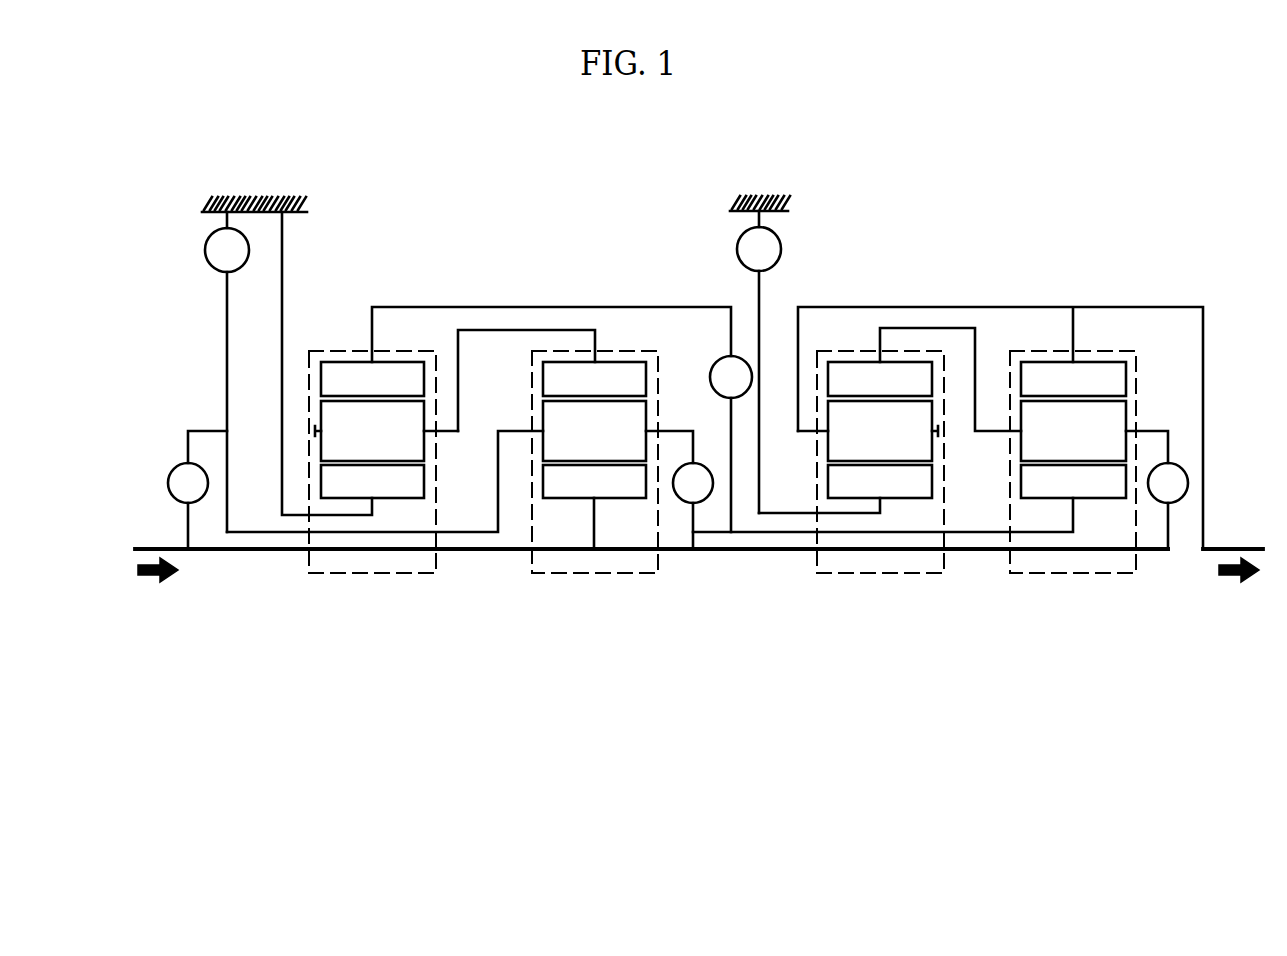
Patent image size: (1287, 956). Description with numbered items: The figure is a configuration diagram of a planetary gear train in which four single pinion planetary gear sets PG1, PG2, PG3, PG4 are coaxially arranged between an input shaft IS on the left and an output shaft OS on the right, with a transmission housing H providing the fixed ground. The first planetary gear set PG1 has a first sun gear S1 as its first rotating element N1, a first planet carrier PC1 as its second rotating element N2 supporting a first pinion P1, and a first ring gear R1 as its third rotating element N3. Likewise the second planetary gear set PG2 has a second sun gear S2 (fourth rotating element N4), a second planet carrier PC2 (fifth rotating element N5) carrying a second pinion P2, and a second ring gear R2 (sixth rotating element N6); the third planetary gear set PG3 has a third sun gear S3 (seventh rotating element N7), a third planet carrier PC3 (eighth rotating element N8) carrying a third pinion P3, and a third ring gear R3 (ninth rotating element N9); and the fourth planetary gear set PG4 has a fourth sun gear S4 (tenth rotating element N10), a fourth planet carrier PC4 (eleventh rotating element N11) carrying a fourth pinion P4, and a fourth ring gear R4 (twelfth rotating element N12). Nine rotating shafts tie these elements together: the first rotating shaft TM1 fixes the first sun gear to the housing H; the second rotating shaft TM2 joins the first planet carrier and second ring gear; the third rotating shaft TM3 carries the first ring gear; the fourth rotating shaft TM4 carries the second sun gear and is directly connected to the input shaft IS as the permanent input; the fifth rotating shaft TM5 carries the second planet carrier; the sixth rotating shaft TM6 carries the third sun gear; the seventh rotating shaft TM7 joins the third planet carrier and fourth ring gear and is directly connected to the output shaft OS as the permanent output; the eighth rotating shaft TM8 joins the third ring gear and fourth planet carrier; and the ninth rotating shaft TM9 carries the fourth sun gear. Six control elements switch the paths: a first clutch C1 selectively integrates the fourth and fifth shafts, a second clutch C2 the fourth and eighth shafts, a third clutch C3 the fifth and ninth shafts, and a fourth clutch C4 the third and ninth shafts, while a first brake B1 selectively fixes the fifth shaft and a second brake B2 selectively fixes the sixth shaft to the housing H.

The input shaft IS is at (148, 547).
The output shaft OS is at (1230, 547).
The transmission housing H is at (268, 196).
The first brake B1 is at (227, 372).
The second brake B2 is at (759, 362).
The first clutch C1 is at (197, 490).
The second clutch C2 is at (1168, 506).
The third clutch C3 is at (693, 506).
The fourth clutch C4 is at (731, 444).
The first planetary gear set PG1 is at (372, 519).
The second planetary gear set PG2 is at (595, 519).
The third planetary gear set PG3 is at (880, 519).
The fourth planetary gear set PG4 is at (1073, 519).
The first pinion P1 is at (369, 431).
The second pinion P2 is at (594, 431).
The third pinion P3 is at (883, 431).
The fourth pinion P4 is at (1073, 431).
The first rotating element N1 is at (372, 481).
The second rotating element N2 is at (457, 471).
The third rotating element N3 is at (372, 379).
The fourth rotating element N4 is at (594, 481).
The fifth rotating element N5 is at (678, 395).
The sixth rotating element N6 is at (594, 379).
The seventh rotating element N7 is at (880, 481).
The eighth rotating element N8 is at (794, 469).
The ninth rotating element N9 is at (880, 379).
The tenth rotating element N10 is at (1073, 481).
The eleventh rotating element N11 is at (1161, 397).
The twelfth rotating element N12 is at (1073, 379).
The first sun gear S1 is at (372, 481).
The second sun gear S2 is at (594, 481).
The third sun gear S3 is at (880, 481).
The fourth sun gear S4 is at (1073, 481).
The first ring gear R1 is at (372, 379).
The second ring gear R2 is at (594, 379).
The third ring gear R3 is at (880, 379).
The fourth ring gear R4 is at (1073, 379).
The first planet carrier PC1 is at (448, 434).
The second planet carrier PC2 is at (681, 428).
The third planet carrier PC3 is at (800, 434).
The fourth planet carrier PC4 is at (1164, 428).
The first rotating shaft TM1 is at (292, 519).
The second rotating shaft TM2 is at (545, 324).
The third rotating shaft TM3 is at (633, 304).
The fourth rotating shaft TM4 is at (719, 553).
The fifth rotating shaft TM5 is at (467, 536).
The sixth rotating shaft TM6 is at (782, 517).
The seventh rotating shaft TM7 is at (876, 304).
The eighth rotating shaft TM8 is at (936, 325).
The ninth rotating shaft TM9 is at (975, 536).